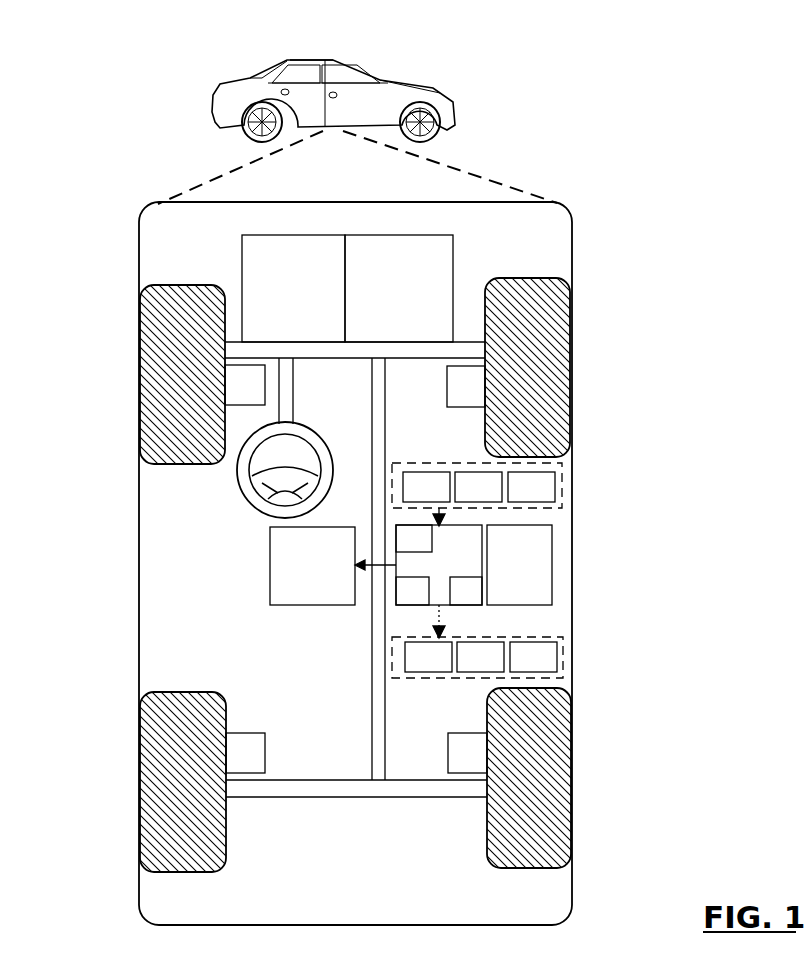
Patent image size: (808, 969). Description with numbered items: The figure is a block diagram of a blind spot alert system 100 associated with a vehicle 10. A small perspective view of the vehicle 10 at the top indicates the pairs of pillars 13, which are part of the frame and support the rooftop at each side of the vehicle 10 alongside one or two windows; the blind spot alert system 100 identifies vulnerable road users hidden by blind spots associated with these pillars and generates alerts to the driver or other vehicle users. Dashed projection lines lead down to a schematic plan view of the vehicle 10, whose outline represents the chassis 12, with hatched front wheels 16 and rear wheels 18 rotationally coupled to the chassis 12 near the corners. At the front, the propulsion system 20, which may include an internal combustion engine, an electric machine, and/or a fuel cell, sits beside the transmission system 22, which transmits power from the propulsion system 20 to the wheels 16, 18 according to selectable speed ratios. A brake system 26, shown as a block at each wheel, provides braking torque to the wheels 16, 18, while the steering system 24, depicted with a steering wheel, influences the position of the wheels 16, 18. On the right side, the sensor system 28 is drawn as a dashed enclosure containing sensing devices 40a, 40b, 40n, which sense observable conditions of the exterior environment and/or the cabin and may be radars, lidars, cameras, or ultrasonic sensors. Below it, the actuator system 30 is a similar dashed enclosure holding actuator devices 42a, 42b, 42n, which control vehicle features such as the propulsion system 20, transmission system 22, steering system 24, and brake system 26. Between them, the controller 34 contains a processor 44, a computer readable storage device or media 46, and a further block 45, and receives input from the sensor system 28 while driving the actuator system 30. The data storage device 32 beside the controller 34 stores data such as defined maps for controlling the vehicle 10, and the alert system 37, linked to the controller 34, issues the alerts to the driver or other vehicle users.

The vehicle 10 is at (457, 102).
The chassis 12 is at (139, 545).
The pillars 13 is at (355, 65).
The front wheels 16 is at (190, 465).
The rear wheels 18 is at (200, 872).
The propulsion system 20 is at (305, 300).
The transmission system 22 is at (412, 300).
The steering system 24 is at (311, 379).
The brake system 26 is at (256, 394).
The sensor system 28 is at (435, 440).
The actuator system 30 is at (440, 678).
The data storage device 32 is at (508, 575).
The controller 34 is at (428, 575).
The alert system 37 is at (301, 575).
The sensing device 40a is at (411, 496).
The sensing device 40b is at (463, 496).
The sensing device 40n is at (516, 496).
The actuator device 42a is at (413, 666).
The actuator device 42b is at (465, 666).
The actuator device 42n is at (518, 666).
The processor 44 is at (403, 601).
The controller module 45 is at (405, 548).
The computer readable storage device or media 46 is at (457, 601).
The blind spot alert system 100 is at (718, 156).